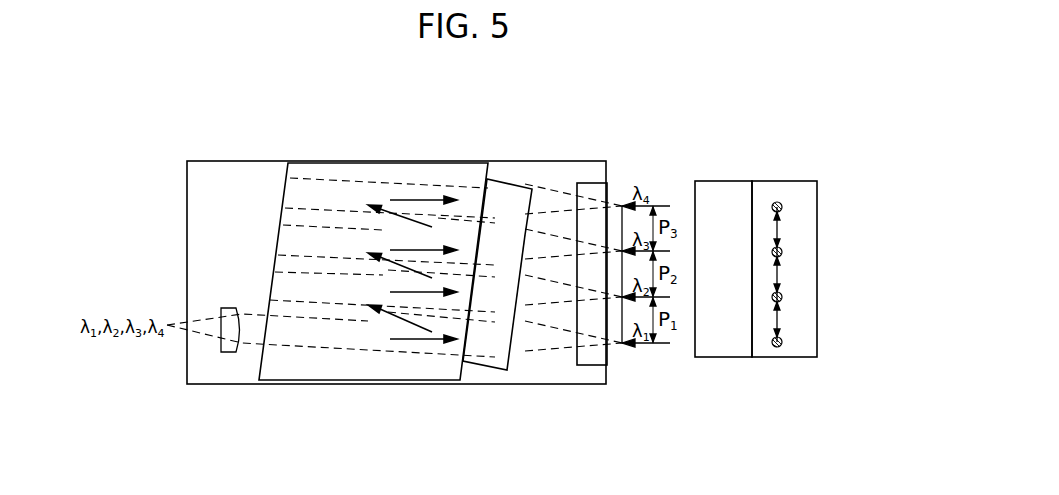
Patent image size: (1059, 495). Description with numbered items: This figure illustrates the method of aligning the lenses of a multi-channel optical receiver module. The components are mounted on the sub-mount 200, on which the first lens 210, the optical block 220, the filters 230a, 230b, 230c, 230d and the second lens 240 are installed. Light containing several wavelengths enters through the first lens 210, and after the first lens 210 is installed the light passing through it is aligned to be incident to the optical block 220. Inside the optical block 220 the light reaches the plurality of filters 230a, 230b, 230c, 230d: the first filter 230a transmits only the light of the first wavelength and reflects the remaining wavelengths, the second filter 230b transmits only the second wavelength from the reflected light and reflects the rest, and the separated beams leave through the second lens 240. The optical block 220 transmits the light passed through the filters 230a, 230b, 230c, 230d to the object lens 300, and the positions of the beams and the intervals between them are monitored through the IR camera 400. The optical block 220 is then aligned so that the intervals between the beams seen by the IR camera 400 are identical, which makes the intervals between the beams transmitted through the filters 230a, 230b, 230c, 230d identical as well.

The sub-mount 200 is at (245, 177).
The first lens 210 is at (232, 335).
The optical block 220 is at (450, 175).
The first filter 230a is at (485, 337).
The second filter 230b is at (493, 295).
The third filter 230c is at (505, 248).
The fourth filter 230d is at (505, 202).
The second lens 240 is at (588, 345).
The object lens 300 is at (722, 350).
The IR camera 400 is at (782, 350).